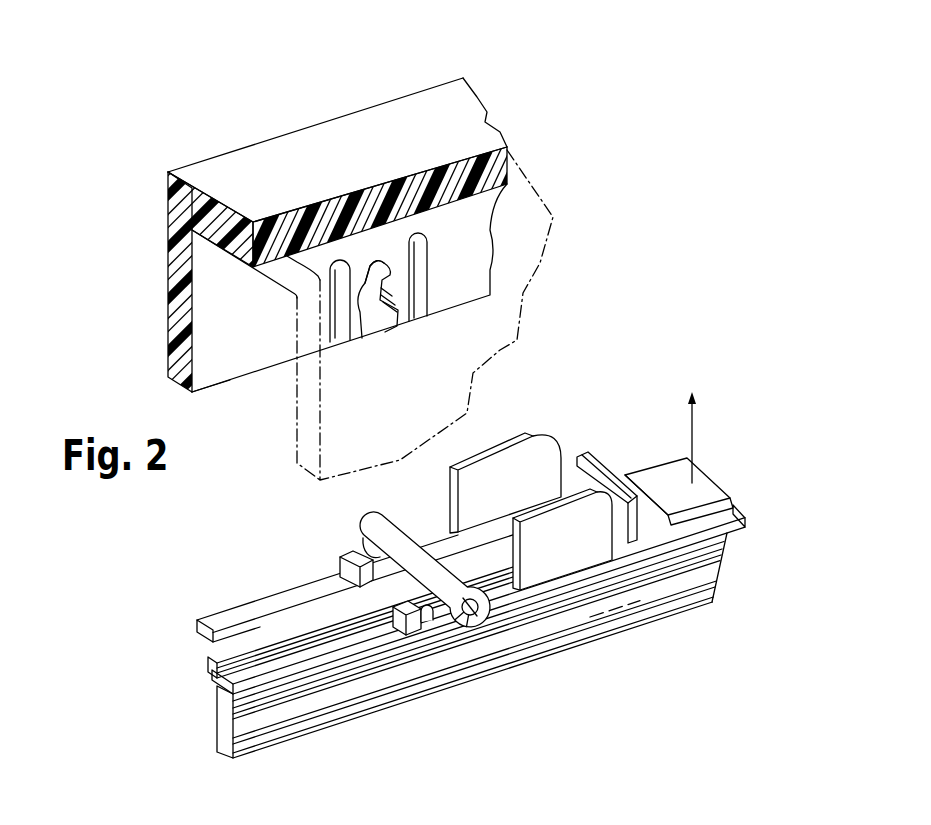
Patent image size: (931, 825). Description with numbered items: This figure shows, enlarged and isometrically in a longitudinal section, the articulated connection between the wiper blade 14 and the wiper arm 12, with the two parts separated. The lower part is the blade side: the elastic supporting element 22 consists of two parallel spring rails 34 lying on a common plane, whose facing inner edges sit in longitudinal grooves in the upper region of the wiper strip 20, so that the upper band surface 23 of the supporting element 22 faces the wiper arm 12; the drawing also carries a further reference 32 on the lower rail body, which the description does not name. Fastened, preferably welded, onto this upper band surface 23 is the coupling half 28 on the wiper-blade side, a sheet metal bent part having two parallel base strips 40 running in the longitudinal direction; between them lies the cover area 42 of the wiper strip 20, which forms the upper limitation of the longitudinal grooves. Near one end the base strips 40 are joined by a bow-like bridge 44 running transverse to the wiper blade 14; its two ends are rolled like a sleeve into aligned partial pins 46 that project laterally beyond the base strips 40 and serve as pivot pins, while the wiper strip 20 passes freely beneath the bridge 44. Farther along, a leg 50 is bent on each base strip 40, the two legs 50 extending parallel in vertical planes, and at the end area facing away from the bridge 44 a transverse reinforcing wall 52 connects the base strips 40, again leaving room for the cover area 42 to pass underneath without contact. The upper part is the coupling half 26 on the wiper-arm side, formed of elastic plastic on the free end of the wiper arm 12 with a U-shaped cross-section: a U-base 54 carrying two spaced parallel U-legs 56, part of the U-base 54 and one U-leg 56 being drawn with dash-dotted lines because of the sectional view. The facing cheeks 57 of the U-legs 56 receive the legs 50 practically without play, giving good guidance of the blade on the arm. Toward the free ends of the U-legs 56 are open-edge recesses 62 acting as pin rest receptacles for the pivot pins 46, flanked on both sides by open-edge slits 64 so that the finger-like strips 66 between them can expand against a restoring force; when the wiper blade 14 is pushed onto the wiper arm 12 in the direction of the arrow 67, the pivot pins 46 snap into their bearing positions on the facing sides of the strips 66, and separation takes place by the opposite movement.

The wiper arm 12 is at (327, 261).
The wiper blade 14 is at (488, 583).
The wiper strip 20 is at (488, 641).
The supporting element 22 is at (752, 507).
The upper band surface 23 is at (347, 633).
The coupling half on the wiper-arm side 26 is at (285, 118).
The coupling half on the wiper-blade side 28 is at (346, 545).
The rail body 32 is at (675, 603).
The spring rails 34 is at (656, 458).
The base strips 40 is at (337, 557).
The cover area 42 is at (250, 633).
The bridge 44 is at (385, 596).
The partial pins 46 is at (385, 613).
The legs 50 is at (565, 490).
The reinforcing wall 52 is at (606, 470).
The U-base 54 is at (463, 137).
The U-legs 56 is at (178, 267).
The cheeks 57 is at (193, 332).
The open-edge recesses 62 is at (379, 327).
The open-edge slits 64 is at (338, 343).
The finger-like strips 66 is at (357, 330).
The arrow 67 is at (692, 440).